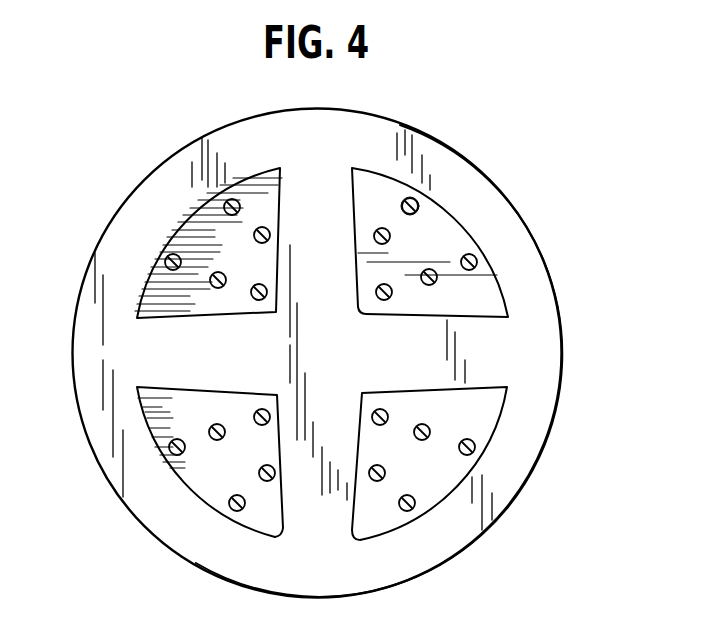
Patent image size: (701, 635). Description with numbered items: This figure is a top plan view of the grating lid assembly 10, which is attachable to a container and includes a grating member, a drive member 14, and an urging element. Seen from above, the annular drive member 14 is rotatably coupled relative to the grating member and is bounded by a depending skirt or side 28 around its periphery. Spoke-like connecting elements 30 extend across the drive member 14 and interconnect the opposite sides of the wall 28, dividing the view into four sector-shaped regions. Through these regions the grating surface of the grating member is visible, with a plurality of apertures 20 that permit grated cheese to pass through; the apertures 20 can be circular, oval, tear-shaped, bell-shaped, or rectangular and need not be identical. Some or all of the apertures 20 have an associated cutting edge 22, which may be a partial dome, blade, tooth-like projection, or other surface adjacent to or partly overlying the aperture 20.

The grating lid assembly 10 is at (327, 353).
The drive member 14 is at (517, 410).
The apertures 20 is at (404, 206).
The cutting edge 22 is at (404, 206).
The depending skirt 28 is at (565, 350).
The spoke-like elements 30 is at (178, 363).